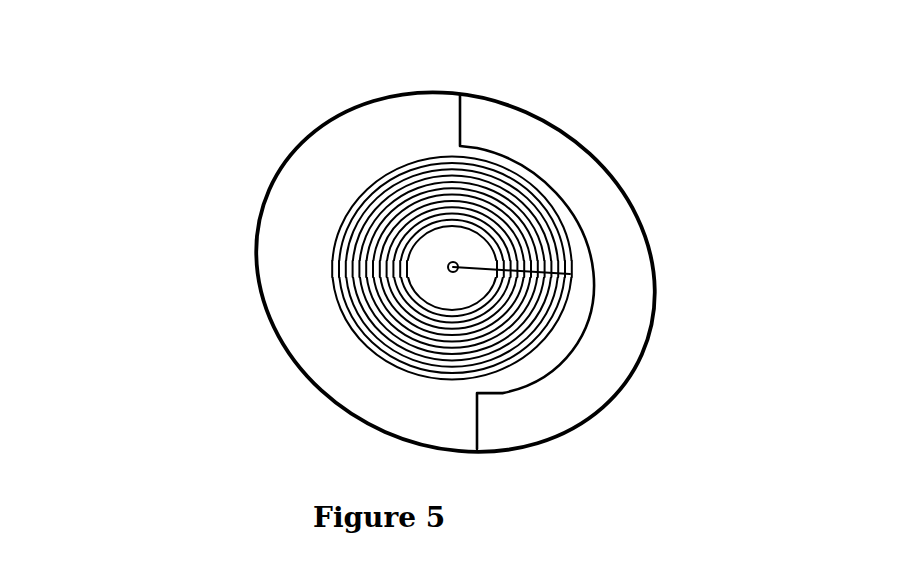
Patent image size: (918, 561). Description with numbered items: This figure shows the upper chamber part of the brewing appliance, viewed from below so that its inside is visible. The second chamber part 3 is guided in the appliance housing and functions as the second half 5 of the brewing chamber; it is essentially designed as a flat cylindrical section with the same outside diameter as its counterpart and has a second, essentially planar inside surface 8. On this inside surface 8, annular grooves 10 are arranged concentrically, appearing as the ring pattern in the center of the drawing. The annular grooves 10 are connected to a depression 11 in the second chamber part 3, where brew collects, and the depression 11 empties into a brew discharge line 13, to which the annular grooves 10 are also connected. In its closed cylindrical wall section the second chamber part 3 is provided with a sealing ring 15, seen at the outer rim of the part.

The second chamber part 3 is at (434, 257).
The second half of the brewing chamber 5 is at (575, 165).
The inside surface 8 is at (363, 145).
The annular grooves 10 is at (368, 218).
The depression 11 is at (453, 267).
The brew discharge line 13 is at (446, 270).
The sealing ring 15 is at (285, 157).